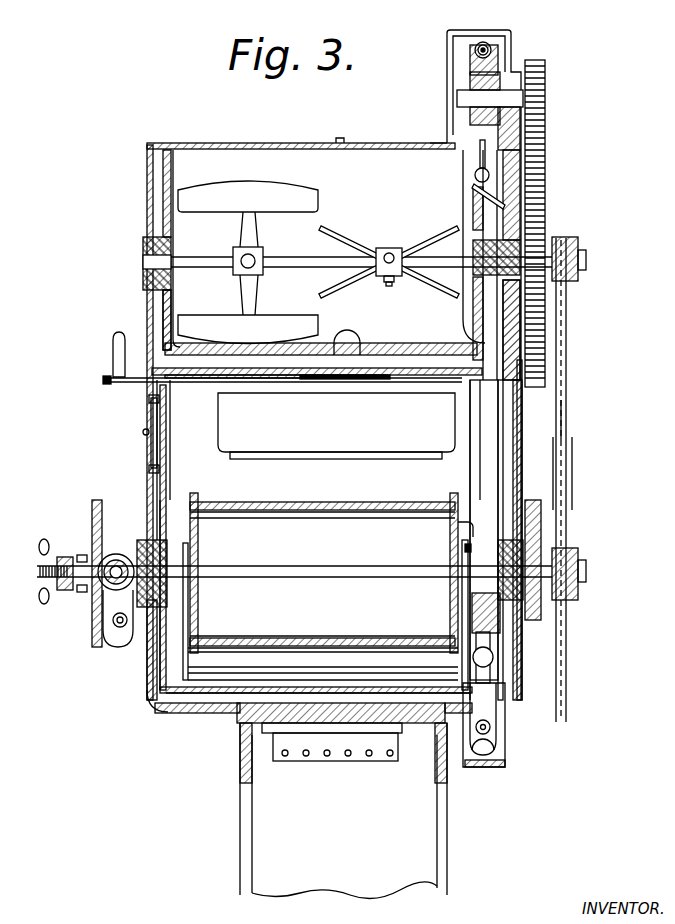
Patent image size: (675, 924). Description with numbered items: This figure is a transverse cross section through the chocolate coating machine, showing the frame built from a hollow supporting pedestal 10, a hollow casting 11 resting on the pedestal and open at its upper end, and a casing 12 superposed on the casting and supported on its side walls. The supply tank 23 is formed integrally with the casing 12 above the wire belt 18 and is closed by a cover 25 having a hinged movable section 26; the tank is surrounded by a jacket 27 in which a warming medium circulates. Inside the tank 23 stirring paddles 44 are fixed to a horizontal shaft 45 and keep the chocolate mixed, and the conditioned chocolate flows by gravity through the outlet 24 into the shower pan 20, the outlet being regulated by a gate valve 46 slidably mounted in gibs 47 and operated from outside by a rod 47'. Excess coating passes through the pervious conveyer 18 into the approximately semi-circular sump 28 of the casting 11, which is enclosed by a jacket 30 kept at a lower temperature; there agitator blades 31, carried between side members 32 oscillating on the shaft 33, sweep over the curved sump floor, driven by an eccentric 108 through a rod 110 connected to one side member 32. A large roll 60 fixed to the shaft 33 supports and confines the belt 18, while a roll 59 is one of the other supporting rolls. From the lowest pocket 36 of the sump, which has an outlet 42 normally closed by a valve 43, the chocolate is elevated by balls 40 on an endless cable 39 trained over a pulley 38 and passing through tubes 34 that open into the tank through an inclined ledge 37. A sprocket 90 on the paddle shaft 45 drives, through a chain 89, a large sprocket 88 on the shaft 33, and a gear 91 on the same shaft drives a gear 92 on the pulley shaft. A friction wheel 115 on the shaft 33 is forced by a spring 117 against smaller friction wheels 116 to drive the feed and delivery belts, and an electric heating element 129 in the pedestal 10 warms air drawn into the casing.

The hollow supporting pedestal 10 is at (447, 784).
The hollow casting 11 is at (147, 678).
The casing 12 is at (522, 413).
The pervious conveyer 18 is at (243, 517).
The shower pan 20 is at (336, 426).
The supply tank 23 is at (171, 160).
The outlet 24 is at (348, 360).
The cover 25 is at (383, 143).
The movable section 26 is at (249, 143).
The jacket 27 is at (163, 313).
The sump 28 is at (168, 707).
The jacket 30 is at (213, 697).
The agitator blades 31 is at (297, 673).
The side members 32 is at (198, 615).
The shaft 33 is at (310, 566).
The tubes 34 is at (482, 450).
The pocket 36 is at (495, 738).
The inclined ledge 37 is at (475, 180).
The pulley 38 is at (497, 60).
The endless cable 39 is at (478, 155).
The balls 40 is at (490, 43).
The outlet 42 is at (481, 752).
The valve 43 is at (503, 768).
The stirring paddles 44 is at (338, 230).
The horizontal shaft 45 is at (293, 268).
The gate valve 46 is at (328, 380).
The gibs 47 is at (276, 403).
The rod 47' is at (282, 399).
The roll 59 is at (175, 437).
The roll 60 is at (256, 502).
The large sprocket 88 is at (570, 471).
The chain 89 is at (566, 419).
The sprocket 90 is at (567, 243).
The gear 91 is at (543, 164).
The gear 92 is at (543, 91).
The eccentric 108 is at (458, 530).
The rod 110 is at (465, 548).
The friction wheel 115 is at (95, 620).
The friction wheels 116 is at (120, 647).
The spring 117 is at (78, 555).
The electric heating element 129 is at (329, 762).